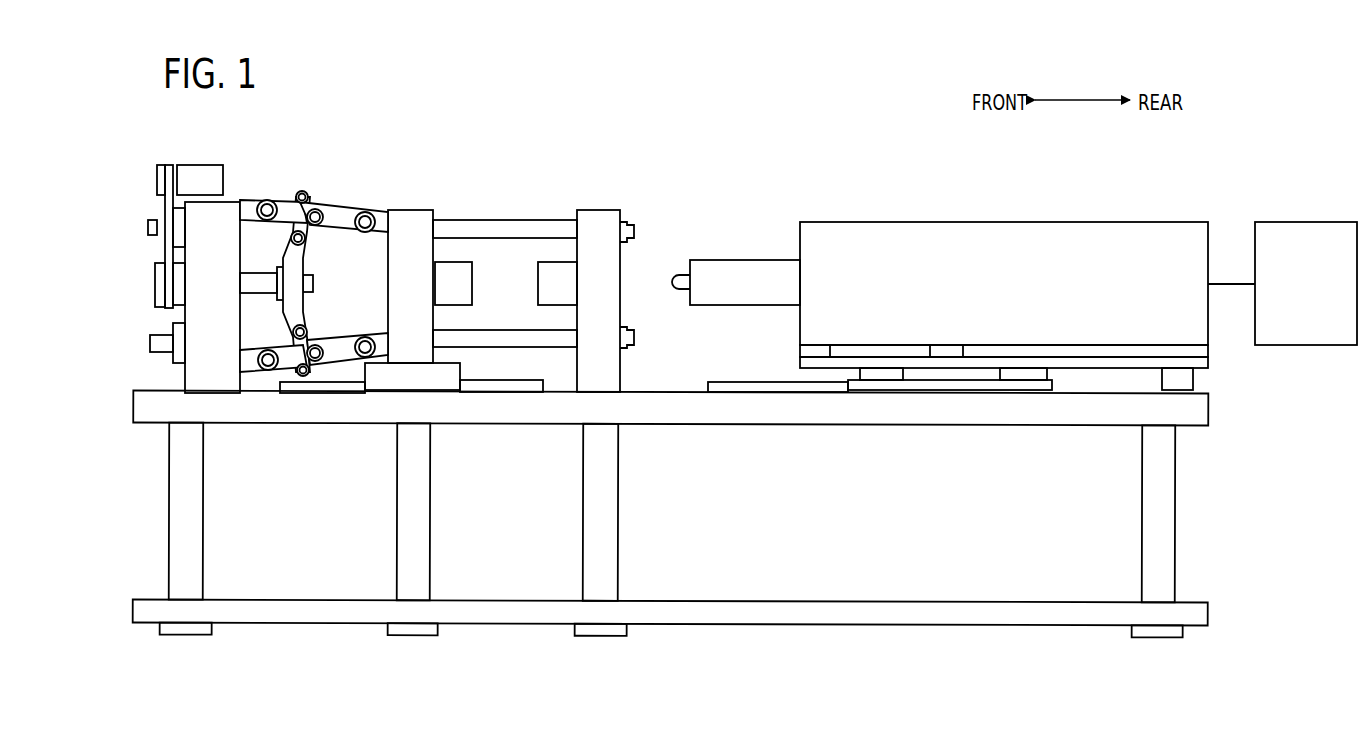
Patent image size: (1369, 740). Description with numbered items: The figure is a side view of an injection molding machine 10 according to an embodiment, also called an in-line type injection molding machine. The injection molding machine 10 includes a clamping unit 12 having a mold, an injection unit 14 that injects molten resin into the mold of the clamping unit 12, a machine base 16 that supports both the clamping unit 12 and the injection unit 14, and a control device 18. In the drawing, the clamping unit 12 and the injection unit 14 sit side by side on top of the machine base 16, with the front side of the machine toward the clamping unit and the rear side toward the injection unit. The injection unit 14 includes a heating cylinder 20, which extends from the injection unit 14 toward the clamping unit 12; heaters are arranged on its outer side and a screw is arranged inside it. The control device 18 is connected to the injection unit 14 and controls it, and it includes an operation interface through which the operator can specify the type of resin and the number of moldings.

The injection molding machine 10 is at (420, 113).
The clamping unit 12 is at (405, 210).
The injection unit 14 is at (860, 222).
The machine base 16 is at (165, 387).
The control device 18 is at (1293, 221).
The heating cylinder 20 is at (730, 258).